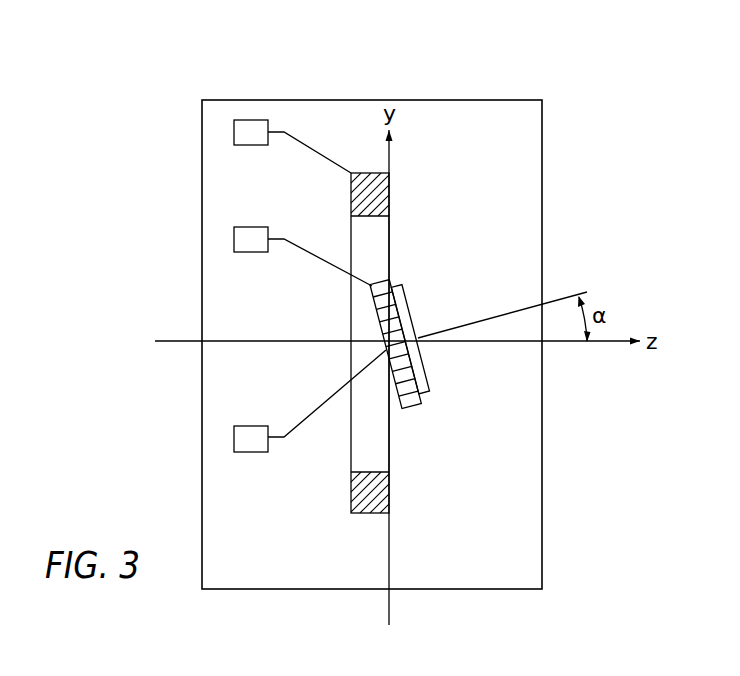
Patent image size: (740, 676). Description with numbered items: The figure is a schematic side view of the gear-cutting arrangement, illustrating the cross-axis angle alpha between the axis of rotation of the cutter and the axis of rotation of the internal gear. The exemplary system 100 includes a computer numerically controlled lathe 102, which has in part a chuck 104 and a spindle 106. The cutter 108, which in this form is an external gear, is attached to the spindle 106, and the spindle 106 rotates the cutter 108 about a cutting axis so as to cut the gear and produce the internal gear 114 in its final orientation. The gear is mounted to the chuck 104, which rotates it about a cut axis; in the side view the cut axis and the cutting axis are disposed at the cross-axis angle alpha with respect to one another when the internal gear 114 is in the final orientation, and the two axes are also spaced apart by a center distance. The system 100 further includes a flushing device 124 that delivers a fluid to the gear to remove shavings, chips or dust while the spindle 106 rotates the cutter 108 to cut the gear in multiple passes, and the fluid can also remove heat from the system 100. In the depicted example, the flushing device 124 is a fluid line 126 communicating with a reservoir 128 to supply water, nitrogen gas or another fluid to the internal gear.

The system 100 is at (533, 67).
The computer numerically controlled (CNC) lathe 102 is at (202, 134).
The chuck 104 is at (234, 132).
The spindle 106 is at (234, 439).
The cutter 108 is at (408, 306).
The internal gear in the final orientation 114 is at (367, 173).
The flushing device 124 is at (236, 211).
The fluid line 126 is at (307, 253).
The reservoir 128 is at (234, 239).